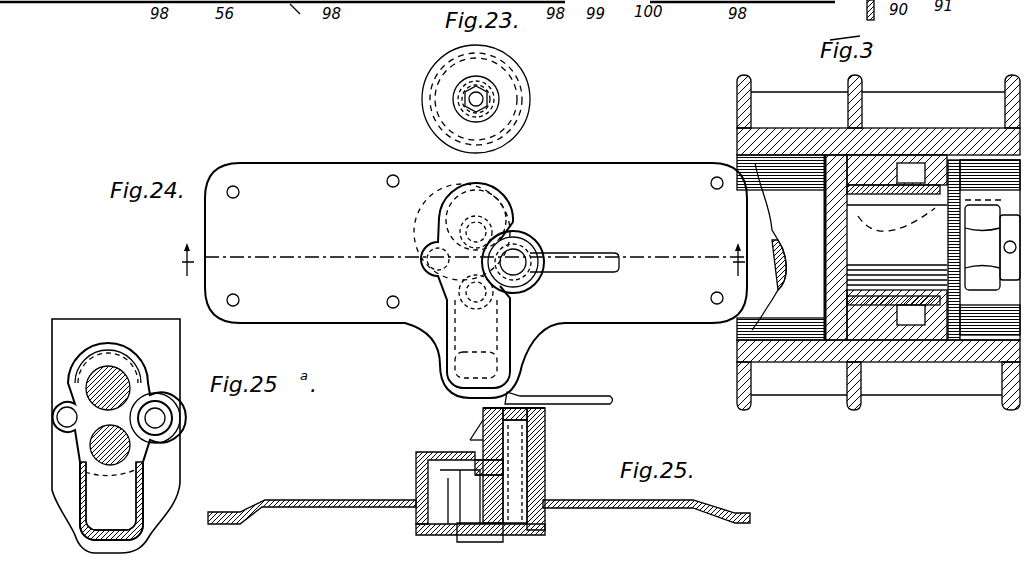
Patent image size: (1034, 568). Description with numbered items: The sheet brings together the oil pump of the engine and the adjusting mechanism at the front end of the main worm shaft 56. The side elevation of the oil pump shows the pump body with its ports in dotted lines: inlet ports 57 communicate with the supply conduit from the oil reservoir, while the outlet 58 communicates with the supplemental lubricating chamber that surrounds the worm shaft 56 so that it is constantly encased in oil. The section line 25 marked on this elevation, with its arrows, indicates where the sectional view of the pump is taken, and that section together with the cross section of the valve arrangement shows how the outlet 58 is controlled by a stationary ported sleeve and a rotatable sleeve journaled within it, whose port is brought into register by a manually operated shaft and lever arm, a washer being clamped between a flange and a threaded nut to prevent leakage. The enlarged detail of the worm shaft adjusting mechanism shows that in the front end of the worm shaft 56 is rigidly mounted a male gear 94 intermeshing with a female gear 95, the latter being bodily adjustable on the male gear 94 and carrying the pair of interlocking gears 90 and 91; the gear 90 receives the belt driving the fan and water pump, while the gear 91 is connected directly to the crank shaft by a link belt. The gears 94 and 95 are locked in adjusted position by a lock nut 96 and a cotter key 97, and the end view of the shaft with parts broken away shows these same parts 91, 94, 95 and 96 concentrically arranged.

In FIG. 24, the section line 25 is at (446, 259).
In FIG. 3, the main worm shaft 56 is at (781, 247).
In FIG. 24, the inlet ports 57 is at (420, 262).
In FIG. 24, the outlet 58 is at (522, 250).
In FIG. 25, the outlet 58 is at (515, 520).
In FIG. 3, the gear 90 is at (742, 347).
In FIG. 23, the gear 91 is at (514, 80).
In FIG. 3, the gear 91 is at (969, 362).
In FIG. 23, the male gear 94 is at (462, 92).
In FIG. 3, the male gear 94 is at (930, 320).
In FIG. 23, the female gear 95 is at (460, 80).
In FIG. 3, the female gear 95 is at (936, 305).
In FIG. 23, the lock nut 96 is at (464, 106).
In FIG. 3, the lock nut 96 is at (992, 247).
In FIG. 3, the cotter key 97 is at (886, 247).